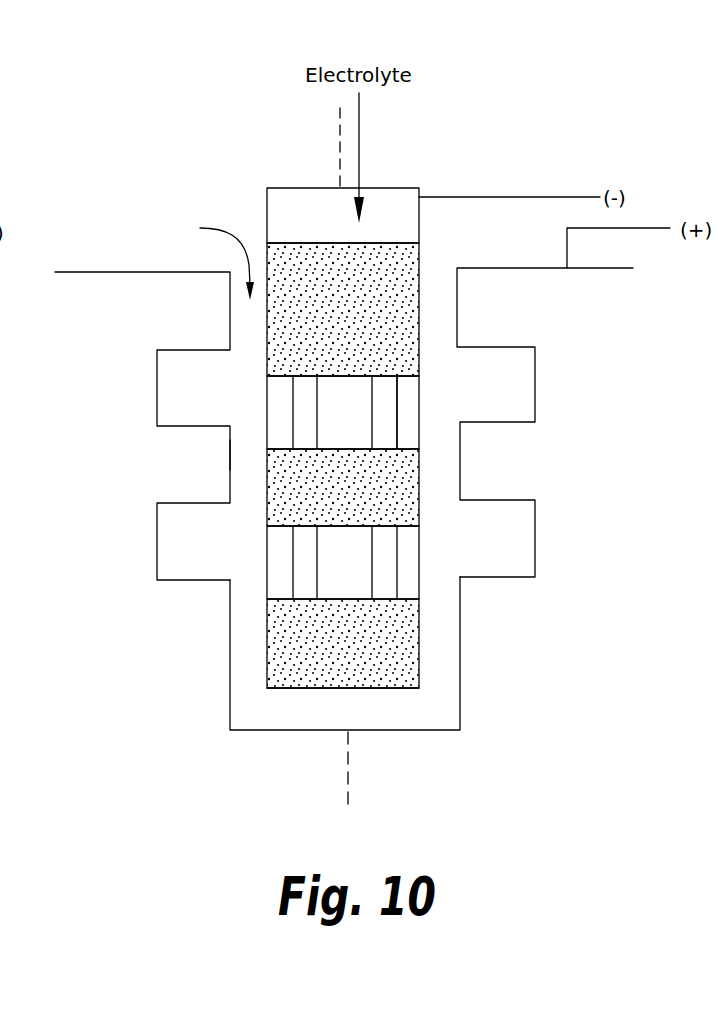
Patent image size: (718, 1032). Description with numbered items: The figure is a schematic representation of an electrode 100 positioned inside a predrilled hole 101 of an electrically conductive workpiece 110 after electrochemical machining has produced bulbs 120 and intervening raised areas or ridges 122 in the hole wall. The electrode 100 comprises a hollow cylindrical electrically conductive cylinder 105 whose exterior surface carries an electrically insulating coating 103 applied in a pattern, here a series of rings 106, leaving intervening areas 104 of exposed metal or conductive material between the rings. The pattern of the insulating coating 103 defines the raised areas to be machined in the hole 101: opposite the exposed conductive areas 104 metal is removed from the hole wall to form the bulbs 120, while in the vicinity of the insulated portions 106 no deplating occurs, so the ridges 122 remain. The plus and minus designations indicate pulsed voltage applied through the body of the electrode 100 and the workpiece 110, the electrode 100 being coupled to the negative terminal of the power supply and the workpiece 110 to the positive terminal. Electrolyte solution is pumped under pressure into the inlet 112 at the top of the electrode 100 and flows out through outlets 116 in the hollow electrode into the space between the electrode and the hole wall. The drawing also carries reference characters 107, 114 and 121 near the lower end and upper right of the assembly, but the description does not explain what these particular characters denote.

The electrode 100 is at (580, 113).
The predrilled hole 101 is at (204, 257).
The electrically insulating coating 103 is at (420, 255).
The intervening areas of exposed conductive material 104 is at (282, 407).
The electrically conductive cylinder 105 is at (292, 207).
The rings of insulating coating 106 is at (432, 462).
The outlet axis 107 is at (347, 768).
The electrically conductive workpiece 110 is at (620, 669).
The inlet 112 is at (342, 188).
The outlet 114 is at (380, 688).
The outlets 116 is at (407, 417).
The bulbs 120 is at (165, 536).
The positive current collector 121 is at (468, 310).
The raised areas or ridges 122 is at (242, 458).